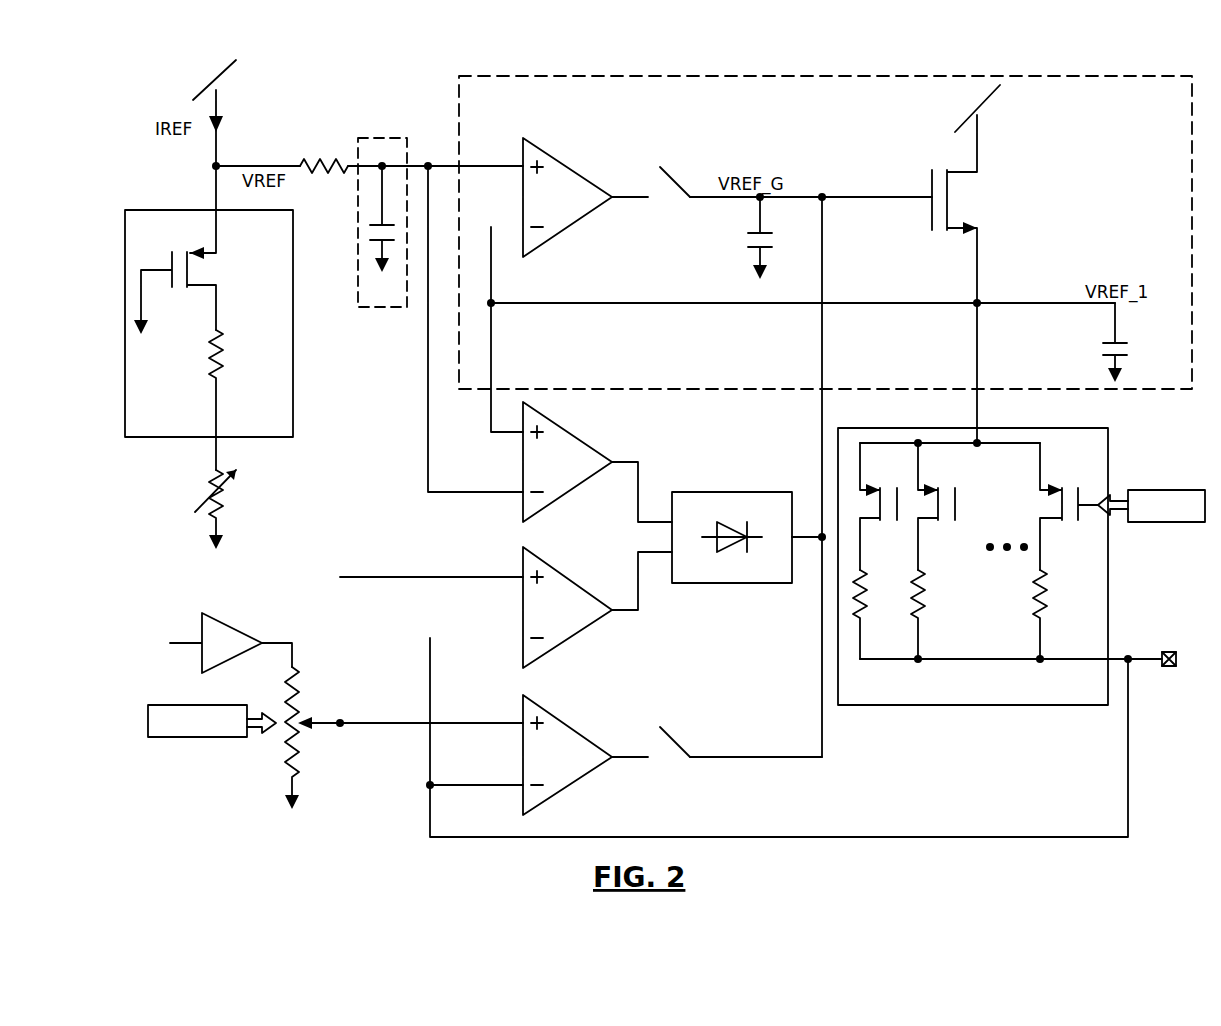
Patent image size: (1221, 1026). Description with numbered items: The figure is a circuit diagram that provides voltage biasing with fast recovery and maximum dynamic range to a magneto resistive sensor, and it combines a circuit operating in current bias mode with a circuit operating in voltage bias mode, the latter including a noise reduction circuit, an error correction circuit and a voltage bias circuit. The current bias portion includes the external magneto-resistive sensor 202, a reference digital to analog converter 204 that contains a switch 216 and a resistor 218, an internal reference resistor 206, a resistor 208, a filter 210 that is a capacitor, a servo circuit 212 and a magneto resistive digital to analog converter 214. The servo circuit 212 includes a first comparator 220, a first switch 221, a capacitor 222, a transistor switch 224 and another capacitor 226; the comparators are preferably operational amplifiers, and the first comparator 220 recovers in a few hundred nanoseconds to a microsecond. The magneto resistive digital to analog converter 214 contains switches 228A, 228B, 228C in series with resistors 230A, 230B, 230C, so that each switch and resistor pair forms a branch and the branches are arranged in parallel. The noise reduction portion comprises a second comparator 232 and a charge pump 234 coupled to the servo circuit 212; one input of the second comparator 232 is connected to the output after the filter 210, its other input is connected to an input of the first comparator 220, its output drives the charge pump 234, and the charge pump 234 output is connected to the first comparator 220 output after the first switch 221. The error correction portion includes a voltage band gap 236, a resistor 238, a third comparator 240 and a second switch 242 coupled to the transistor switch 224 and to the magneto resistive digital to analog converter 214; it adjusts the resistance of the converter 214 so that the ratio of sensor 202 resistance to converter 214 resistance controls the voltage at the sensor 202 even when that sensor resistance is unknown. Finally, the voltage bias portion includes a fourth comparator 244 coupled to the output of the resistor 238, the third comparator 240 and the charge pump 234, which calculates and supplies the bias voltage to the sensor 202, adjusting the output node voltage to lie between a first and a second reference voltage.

The external magneto-resistive sensor (RMR) 202 is at (1172, 667).
The reference digital to analog converter (REF_DAC) 204 is at (225, 210).
The internal reference resistor (RMR_REF) 206 is at (228, 505).
The resistor 208 is at (325, 160).
The filter 210 is at (389, 308).
The servo circuit 212 is at (632, 390).
The magneto resistive digital to analog converter (MR_DAC) 214 is at (1010, 705).
The switch 216 is at (215, 250).
The resistor 218 is at (228, 358).
The first comparator (BUF1) 220 is at (570, 165).
The first switch 221 is at (675, 182).
The capacitor 222 is at (760, 240).
The switch M2 224 is at (958, 170).
The capacitor 226 is at (1115, 345).
The switch 228A is at (868, 522).
The switch 228B is at (926, 522).
The switch 228C is at (1050, 522).
The resistor 230A is at (868, 612).
The resistor 230B is at (926, 612).
The resistor 230C is at (1048, 612).
The second comparator 232 is at (570, 495).
The charge pump 234 is at (692, 492).
The voltage band gap 236 is at (230, 628).
The resistor 238 is at (302, 760).
The third comparator 240 is at (562, 725).
The second switch 242 is at (677, 737).
The fourth comparator 244 is at (562, 580).